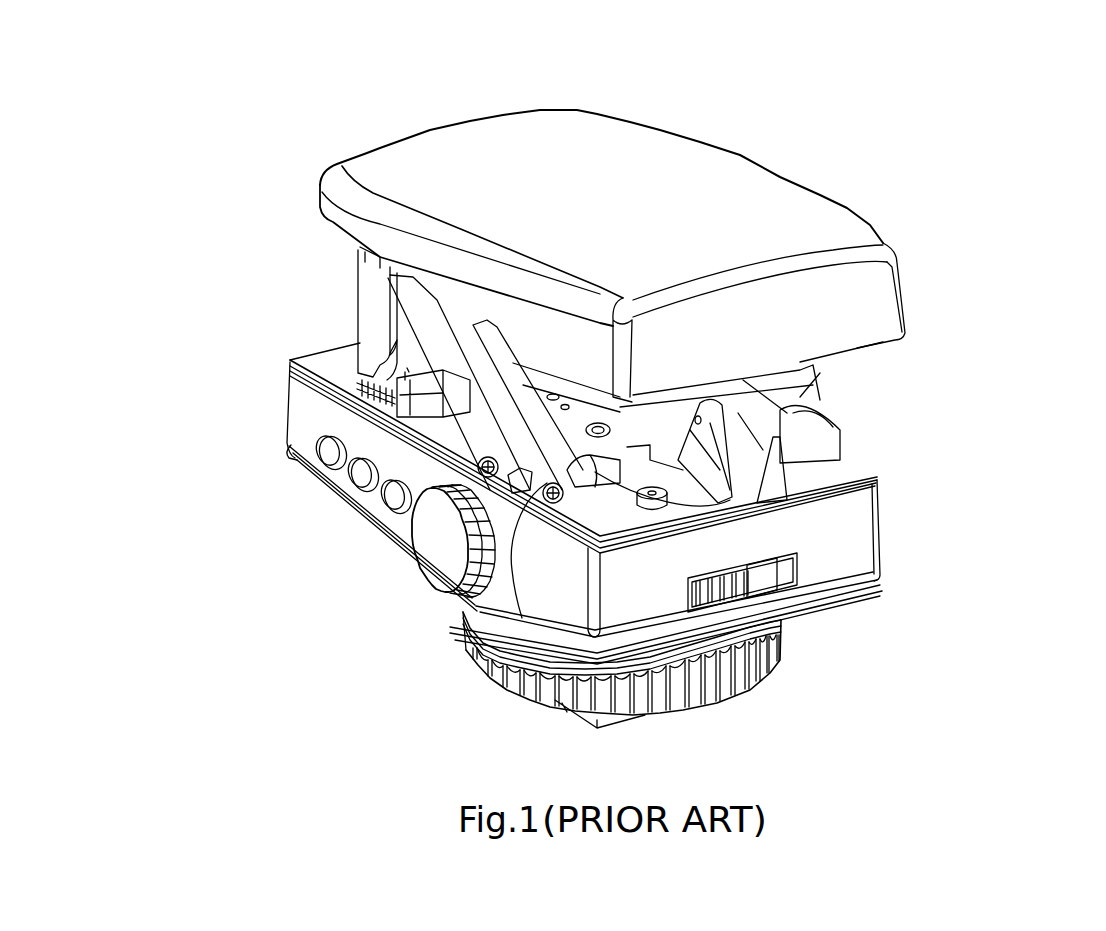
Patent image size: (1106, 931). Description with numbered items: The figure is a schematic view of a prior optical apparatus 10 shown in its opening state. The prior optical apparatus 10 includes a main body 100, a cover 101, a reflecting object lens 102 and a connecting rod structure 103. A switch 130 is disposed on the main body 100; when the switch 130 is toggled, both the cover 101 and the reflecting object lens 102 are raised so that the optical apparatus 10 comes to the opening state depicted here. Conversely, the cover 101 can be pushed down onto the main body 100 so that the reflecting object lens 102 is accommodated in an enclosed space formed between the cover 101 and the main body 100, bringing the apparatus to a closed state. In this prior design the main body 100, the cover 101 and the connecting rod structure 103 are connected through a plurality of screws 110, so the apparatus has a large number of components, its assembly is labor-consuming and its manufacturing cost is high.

The prior optical apparatus 10 is at (78, 63).
The main body 100 is at (840, 552).
The cover 101 is at (760, 192).
The reflecting object lens 102 is at (370, 314).
The connecting rod structure 103 is at (467, 390).
The screws 110 is at (473, 612).
The switch 130 is at (797, 585).